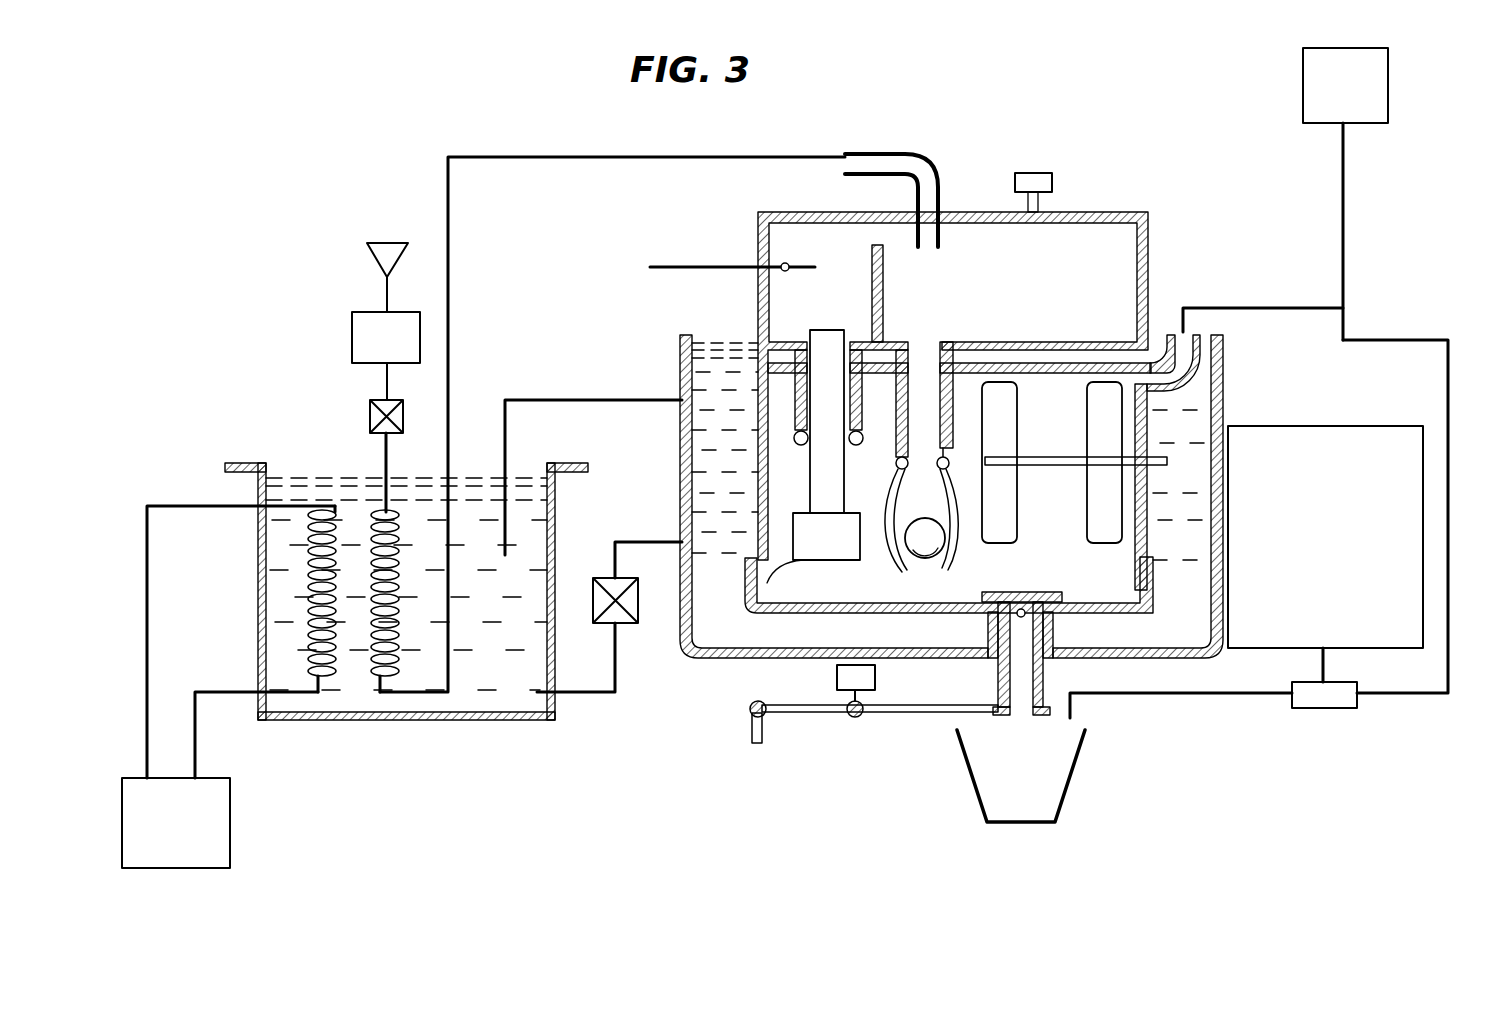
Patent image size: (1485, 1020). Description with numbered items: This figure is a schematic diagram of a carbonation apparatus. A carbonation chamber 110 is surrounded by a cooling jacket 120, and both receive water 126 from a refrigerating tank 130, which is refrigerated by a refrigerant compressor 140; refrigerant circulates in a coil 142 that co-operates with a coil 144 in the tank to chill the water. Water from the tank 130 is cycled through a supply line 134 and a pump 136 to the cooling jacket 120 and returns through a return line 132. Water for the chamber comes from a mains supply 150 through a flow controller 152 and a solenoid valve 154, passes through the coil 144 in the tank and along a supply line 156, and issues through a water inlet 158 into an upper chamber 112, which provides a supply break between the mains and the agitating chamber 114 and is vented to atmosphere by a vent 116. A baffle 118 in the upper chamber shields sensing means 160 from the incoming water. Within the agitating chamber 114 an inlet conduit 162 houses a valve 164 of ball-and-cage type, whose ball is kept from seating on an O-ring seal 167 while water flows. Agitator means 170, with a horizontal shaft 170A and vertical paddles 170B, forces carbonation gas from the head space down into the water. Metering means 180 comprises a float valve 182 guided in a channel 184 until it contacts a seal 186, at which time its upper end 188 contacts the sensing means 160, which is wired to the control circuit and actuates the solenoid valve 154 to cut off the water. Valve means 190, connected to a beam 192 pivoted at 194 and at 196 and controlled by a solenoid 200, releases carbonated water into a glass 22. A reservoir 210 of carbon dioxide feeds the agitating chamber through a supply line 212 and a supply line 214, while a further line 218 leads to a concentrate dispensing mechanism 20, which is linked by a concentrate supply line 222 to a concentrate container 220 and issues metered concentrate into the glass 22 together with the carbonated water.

The concentrate dispensing mechanism 20 is at (1308, 702).
The glass 22 is at (1065, 785).
The carbonation chamber 110 is at (1118, 188).
The upper chamber 112 is at (1002, 228).
The agitating chamber 114 is at (1115, 592).
The vent 116 is at (1030, 173).
The baffle 118 is at (884, 265).
The cooling jacket 120 is at (683, 345).
The water 126 is at (693, 505).
The refrigerating tank 130 is at (475, 702).
The return line 132 is at (603, 398).
The supply line 134 is at (619, 561).
The pump 136 is at (622, 627).
The refrigerant compressor 140 is at (230, 828).
The coil 142 is at (318, 700).
The coil 144 is at (390, 700).
The mains supply 150 is at (368, 262).
The flow controller 152 is at (352, 337).
The solenoid valve 154 is at (370, 417).
The supply line 156 is at (448, 183).
The water inlet 158 is at (938, 247).
The sensing means 160 is at (700, 267).
The inlet conduit 162 is at (895, 428).
The valve 164 is at (968, 470).
The O-ring seal 167 is at (948, 478).
The agitator means 170 is at (1060, 422).
The horizontal shaft 170A is at (1165, 519).
The vertical paddles 170B is at (1020, 512).
The metering means 180 is at (693, 460).
The float valve 182 is at (757, 580).
The channel 184 is at (828, 385).
The seal 186 is at (693, 414).
The upper end 188 is at (807, 340).
The valve means 190 is at (1072, 698).
The beam 192 is at (820, 714).
The pivot 194 is at (866, 714).
The pivot 196 is at (762, 715).
The solenoid 200 is at (837, 680).
The reservoir 210 is at (1303, 85).
The supply line 212 is at (1343, 185).
The supply line 214 is at (1273, 308).
The further line 218 is at (1400, 340).
The concentrate container 220 is at (1338, 427).
The concentrate supply line 222 is at (1328, 665).